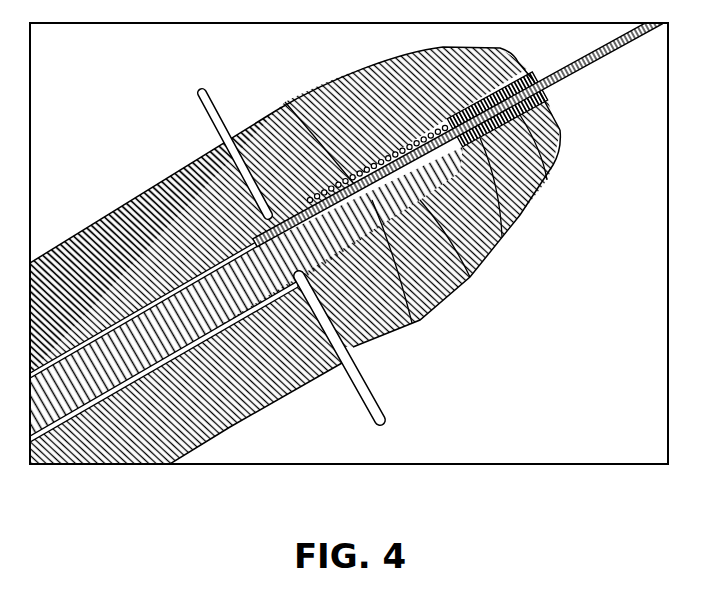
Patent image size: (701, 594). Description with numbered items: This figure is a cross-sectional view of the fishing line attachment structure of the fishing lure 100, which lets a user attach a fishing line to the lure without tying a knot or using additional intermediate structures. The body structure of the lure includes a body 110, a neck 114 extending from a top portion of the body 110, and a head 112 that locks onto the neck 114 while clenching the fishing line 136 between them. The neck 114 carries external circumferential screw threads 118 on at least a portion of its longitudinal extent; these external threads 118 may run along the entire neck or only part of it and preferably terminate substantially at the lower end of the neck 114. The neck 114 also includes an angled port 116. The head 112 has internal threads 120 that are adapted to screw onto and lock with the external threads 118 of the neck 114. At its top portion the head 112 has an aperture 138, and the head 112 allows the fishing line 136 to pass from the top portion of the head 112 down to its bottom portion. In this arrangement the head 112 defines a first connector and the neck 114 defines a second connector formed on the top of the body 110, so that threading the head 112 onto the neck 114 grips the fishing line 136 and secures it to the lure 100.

The fishing lure 100 is at (437, 400).
The body 110 is at (133, 438).
The head 112 is at (502, 250).
The neck 114 is at (417, 307).
The angled port 116 is at (287, 102).
The external threads 118 is at (467, 283).
The internal threads 120 is at (547, 180).
The fishing line 136 is at (590, 68).
The aperture 138 is at (555, 135).